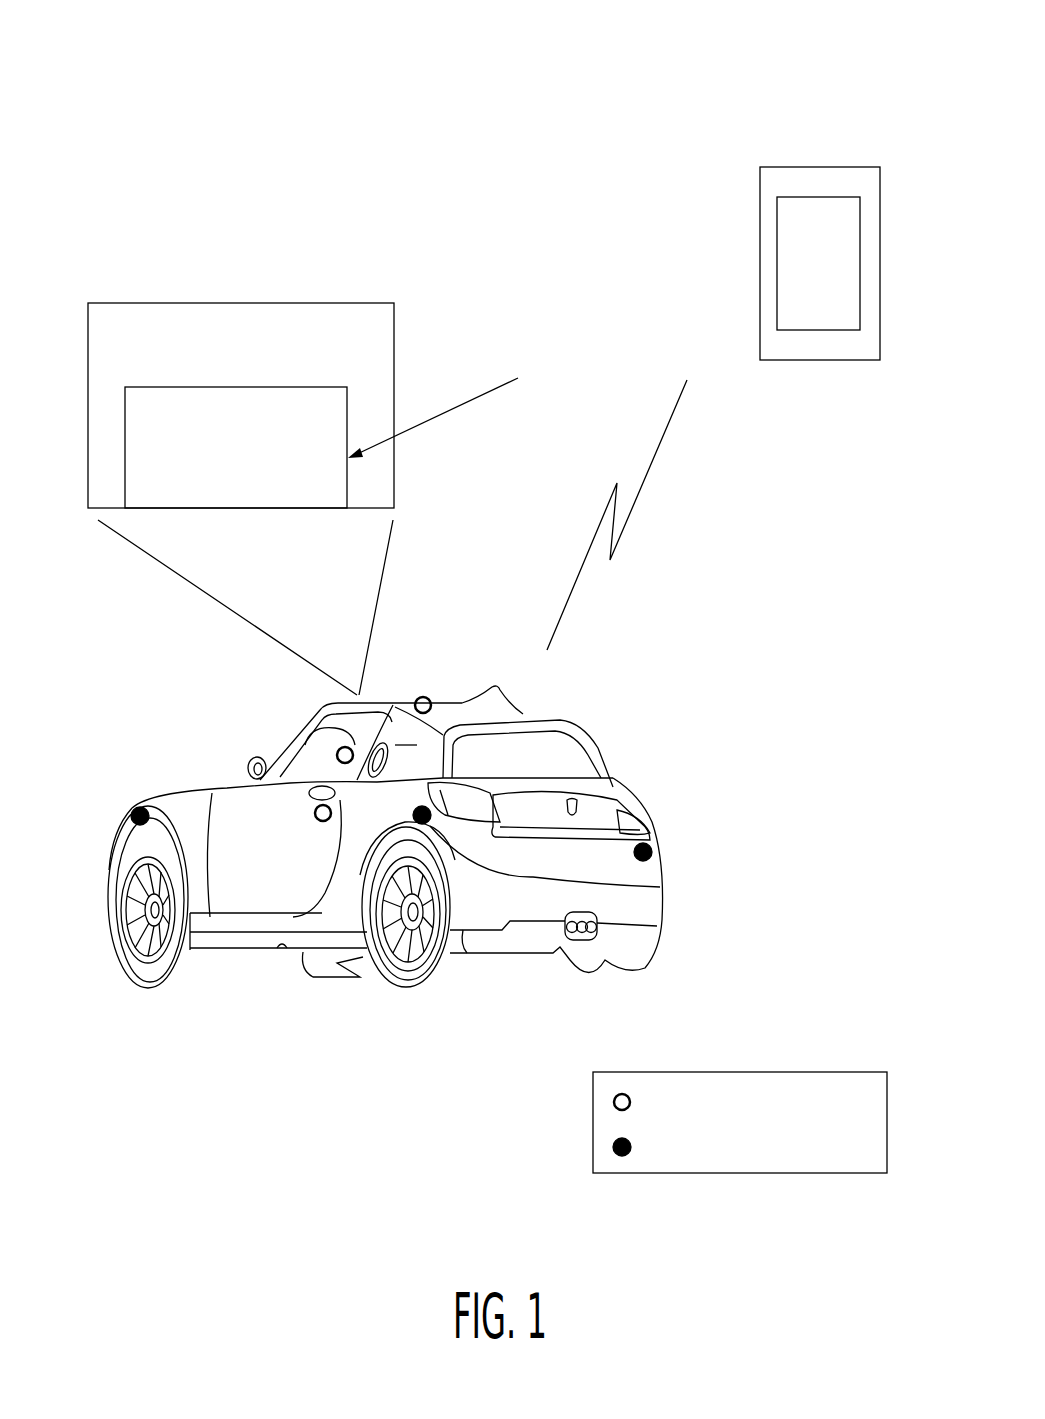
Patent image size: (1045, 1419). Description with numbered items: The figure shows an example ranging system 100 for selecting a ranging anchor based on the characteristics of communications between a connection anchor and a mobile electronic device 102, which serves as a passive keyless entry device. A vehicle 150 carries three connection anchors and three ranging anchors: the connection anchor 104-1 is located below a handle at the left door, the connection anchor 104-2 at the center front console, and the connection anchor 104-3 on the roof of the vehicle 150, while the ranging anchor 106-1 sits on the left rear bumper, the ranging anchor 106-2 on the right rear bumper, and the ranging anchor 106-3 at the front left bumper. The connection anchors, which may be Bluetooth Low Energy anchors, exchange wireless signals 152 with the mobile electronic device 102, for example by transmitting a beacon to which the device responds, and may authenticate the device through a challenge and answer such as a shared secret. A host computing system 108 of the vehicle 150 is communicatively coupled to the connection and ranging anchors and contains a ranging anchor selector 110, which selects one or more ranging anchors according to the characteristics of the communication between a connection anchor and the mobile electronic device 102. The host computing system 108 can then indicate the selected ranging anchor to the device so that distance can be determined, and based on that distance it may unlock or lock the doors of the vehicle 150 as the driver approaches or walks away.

The ranging system 100 is at (174, 146).
The mobile electronic device 102 is at (822, 343).
The connection anchor 104-1 is at (315, 818).
The connection anchor 104-2 is at (337, 753).
The connection anchor 104-3 is at (428, 697).
The ranging anchor 106-1 is at (600, 884).
The ranging anchor 106-2 is at (652, 846).
The ranging anchor 106-3 is at (140, 808).
The host computing system 108 is at (299, 296).
The ranging anchor selector 110 is at (258, 488).
The vehicle 150 is at (500, 980).
The wireless signals 152 is at (648, 473).